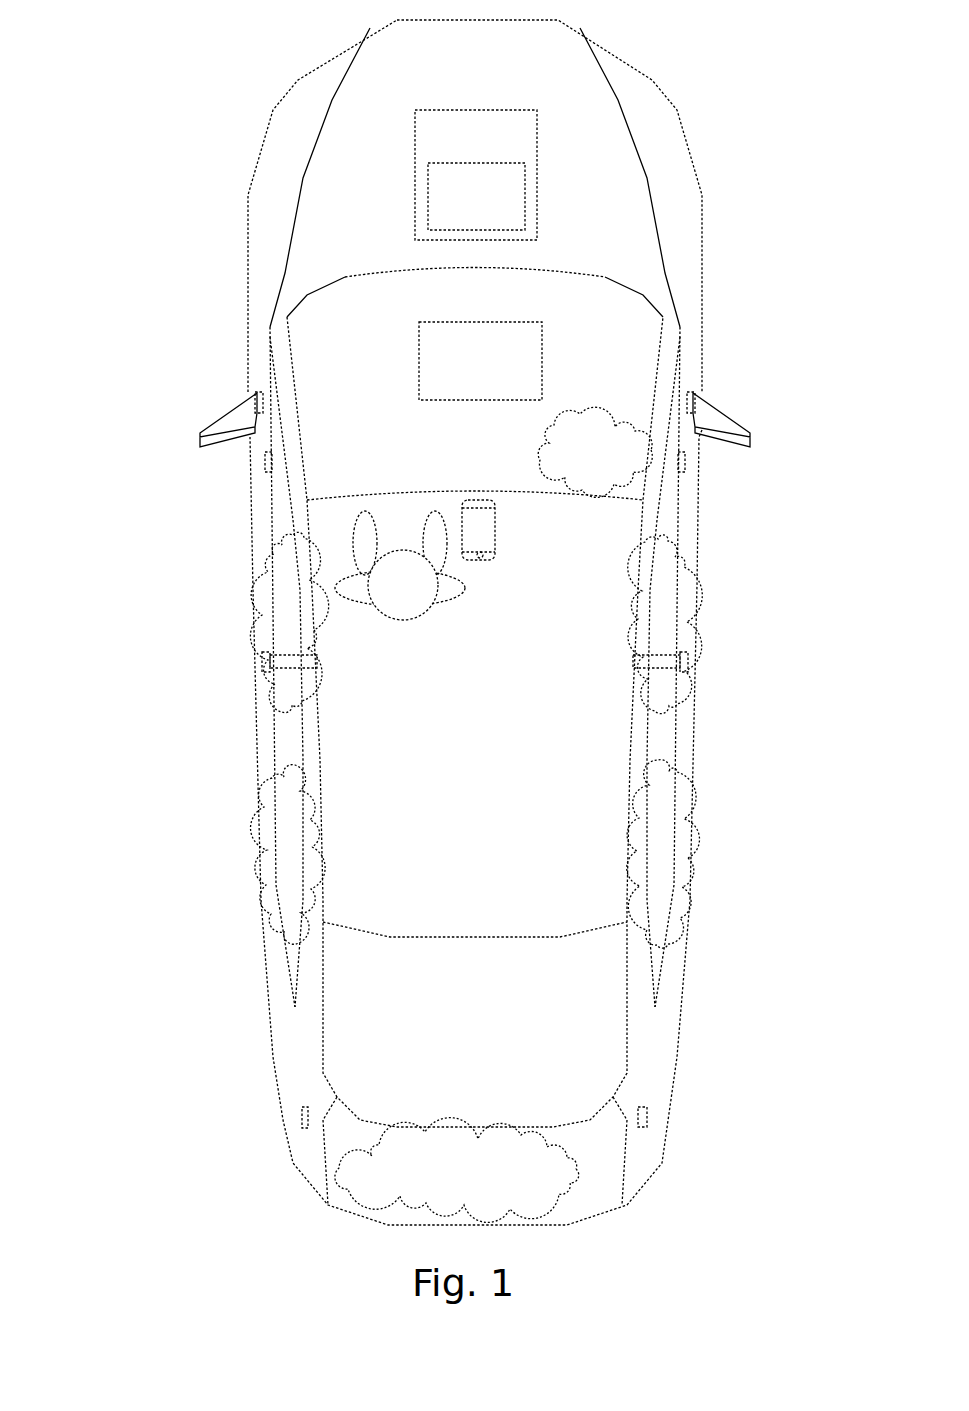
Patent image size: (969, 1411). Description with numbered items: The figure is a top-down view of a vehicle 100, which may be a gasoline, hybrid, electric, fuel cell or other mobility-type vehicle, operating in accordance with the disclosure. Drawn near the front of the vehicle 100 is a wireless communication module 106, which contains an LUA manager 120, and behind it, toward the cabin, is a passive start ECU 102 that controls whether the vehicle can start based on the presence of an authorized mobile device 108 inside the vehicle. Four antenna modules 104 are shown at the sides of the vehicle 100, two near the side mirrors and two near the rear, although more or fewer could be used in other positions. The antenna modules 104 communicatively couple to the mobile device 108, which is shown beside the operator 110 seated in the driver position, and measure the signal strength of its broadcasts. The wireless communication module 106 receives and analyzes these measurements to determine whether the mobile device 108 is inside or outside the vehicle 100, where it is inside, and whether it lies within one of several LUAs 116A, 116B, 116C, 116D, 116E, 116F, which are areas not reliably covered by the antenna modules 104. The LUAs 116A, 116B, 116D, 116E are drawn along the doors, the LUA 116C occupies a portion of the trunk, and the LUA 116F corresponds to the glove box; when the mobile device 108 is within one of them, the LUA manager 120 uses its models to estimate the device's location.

The vehicle 100 is at (273, 127).
The passive start ECU 102 is at (480, 361).
The antenna modules 104 is at (265, 463).
The wireless communication module 106 is at (476, 175).
The mobile device 108 is at (480, 560).
The operator 110 is at (387, 550).
The LUA 116A is at (290, 622).
The LUA 116B is at (273, 850).
The LUA 116C is at (535, 1173).
The LUA 116D is at (680, 857).
The LUA 116E is at (687, 612).
The LUA 116F is at (598, 445).
The LUA manager 120 is at (476, 196).